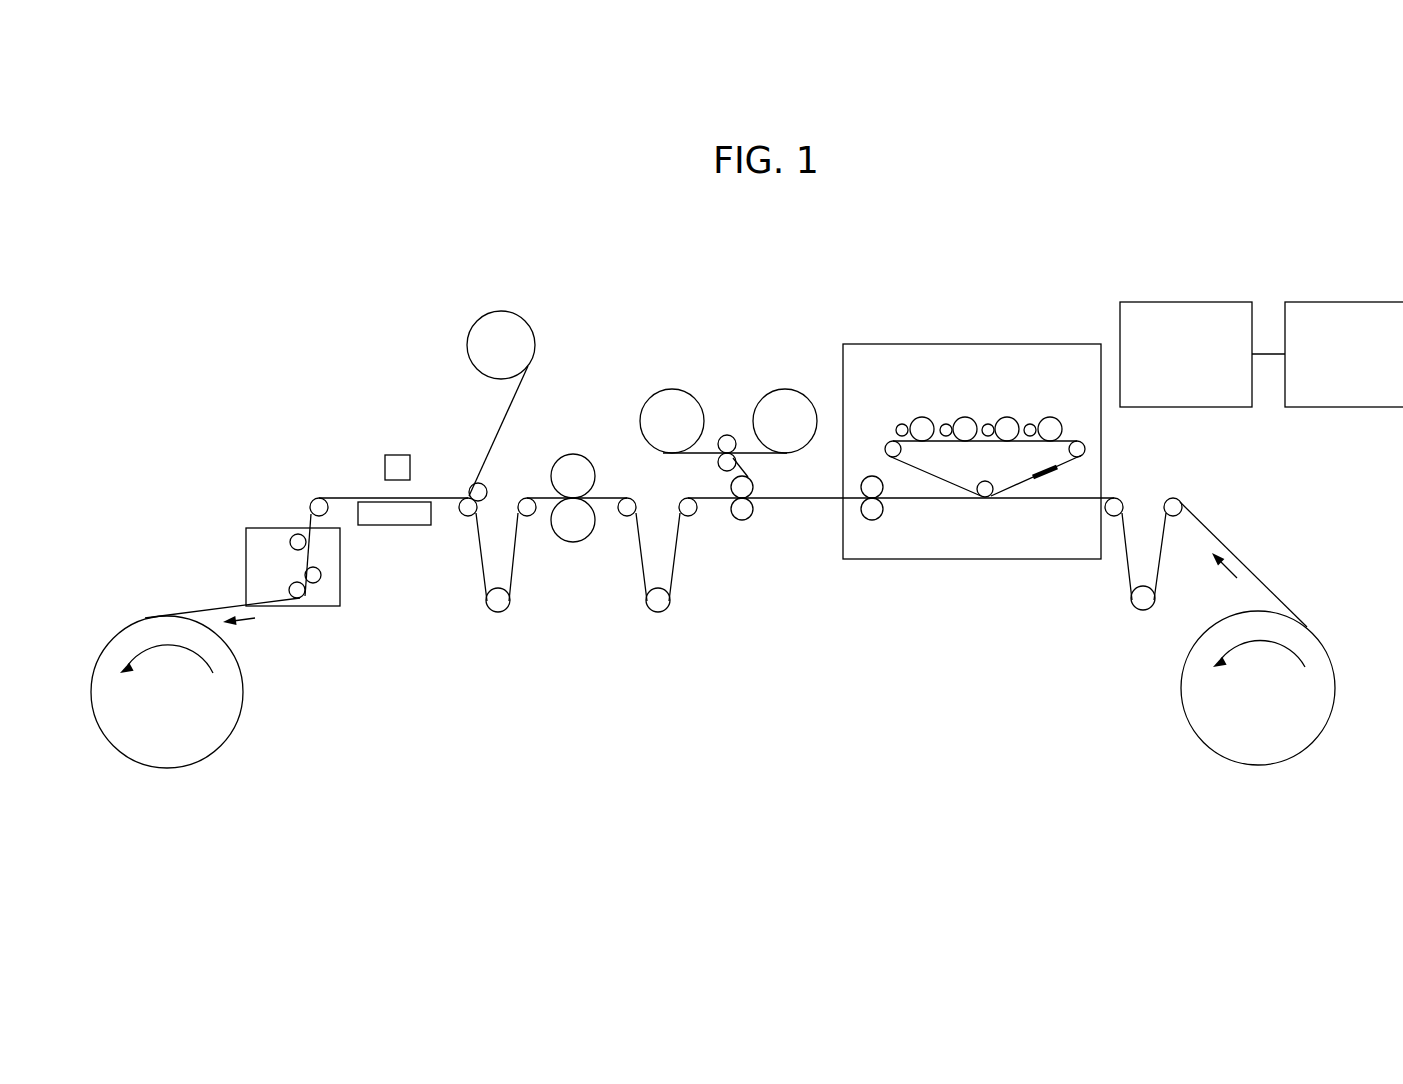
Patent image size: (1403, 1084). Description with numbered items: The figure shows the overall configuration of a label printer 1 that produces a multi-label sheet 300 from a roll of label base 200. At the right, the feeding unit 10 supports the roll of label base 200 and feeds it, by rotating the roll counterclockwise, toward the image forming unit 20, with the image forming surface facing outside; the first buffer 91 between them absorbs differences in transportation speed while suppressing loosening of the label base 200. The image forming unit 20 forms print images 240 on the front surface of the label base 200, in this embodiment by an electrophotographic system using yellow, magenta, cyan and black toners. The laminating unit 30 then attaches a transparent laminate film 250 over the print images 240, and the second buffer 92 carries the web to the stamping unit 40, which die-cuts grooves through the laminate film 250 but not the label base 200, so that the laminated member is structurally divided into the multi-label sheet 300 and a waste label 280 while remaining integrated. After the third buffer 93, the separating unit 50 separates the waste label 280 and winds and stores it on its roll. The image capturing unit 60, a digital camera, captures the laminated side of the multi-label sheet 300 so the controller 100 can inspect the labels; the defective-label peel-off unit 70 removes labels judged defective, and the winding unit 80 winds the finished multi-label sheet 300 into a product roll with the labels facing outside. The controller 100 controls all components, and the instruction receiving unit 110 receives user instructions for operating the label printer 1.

The label printer 1 is at (229, 276).
The feeding unit 10 is at (1248, 786).
The image forming unit 20 is at (939, 580).
The laminating unit 30 is at (727, 392).
The stamping unit 40 is at (568, 560).
The separating unit 50 is at (505, 296).
The image capturing unit 60 is at (396, 440).
The defective-label peel-off unit 70 is at (270, 513).
The winding unit 80 is at (158, 788).
The first buffer 91 is at (1131, 630).
The second buffer 92 is at (656, 630).
The third buffer 93 is at (494, 630).
The controller 100 is at (1190, 301).
The instruction receiving unit 110 is at (1350, 301).
The label base 200 is at (1247, 560).
The print images 240 is at (1050, 478).
The laminate film 250 is at (748, 467).
The waste label 280 is at (515, 403).
The multi-label sheet 300 is at (217, 605).